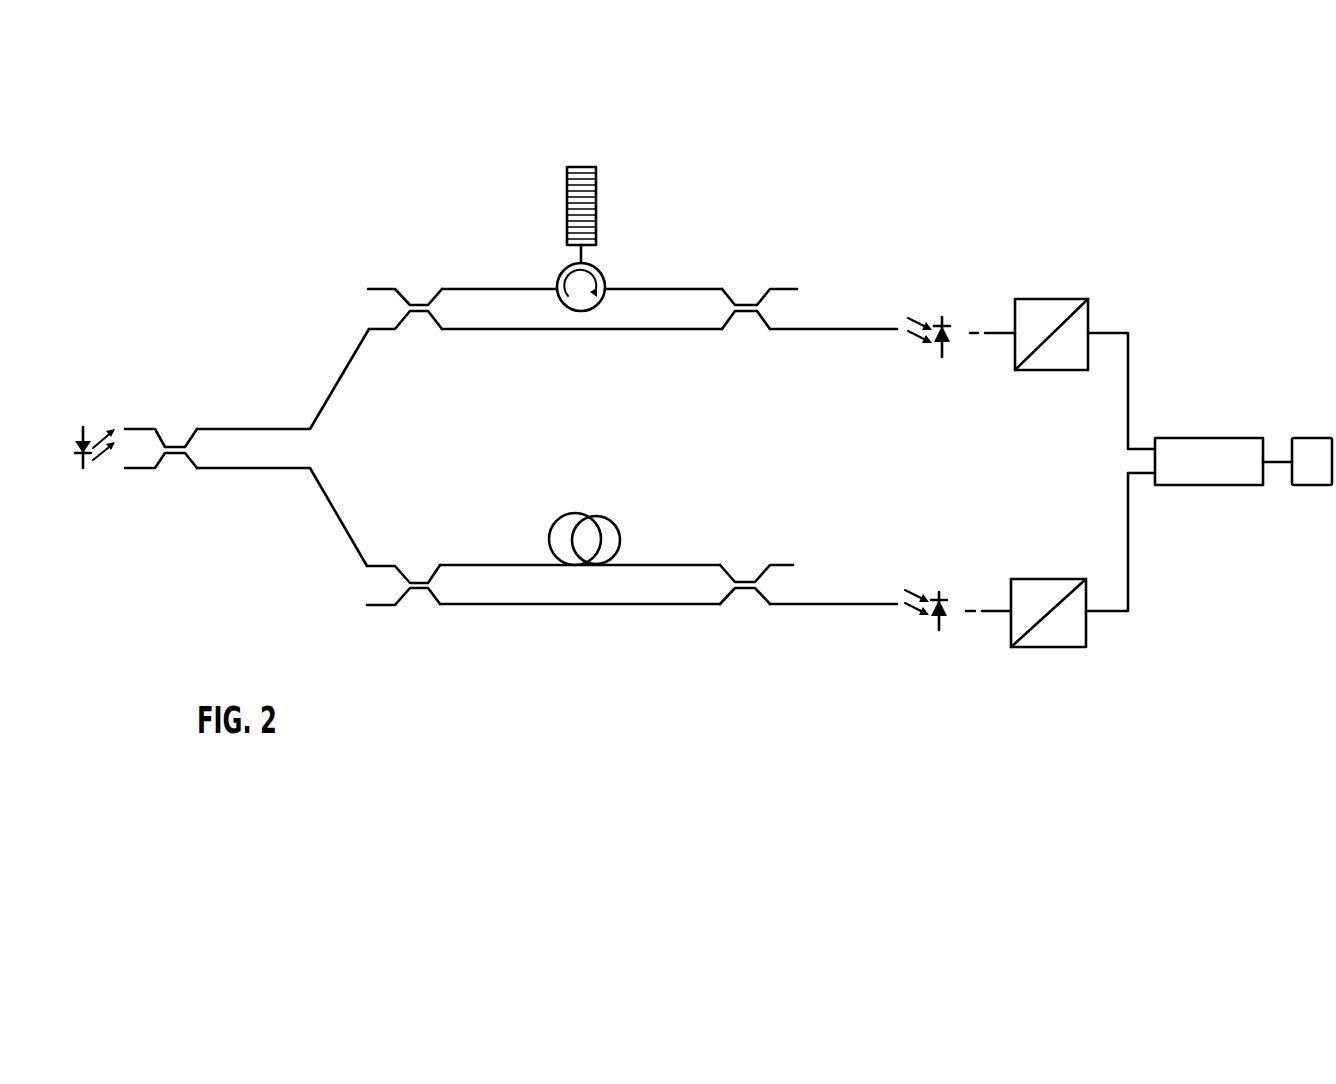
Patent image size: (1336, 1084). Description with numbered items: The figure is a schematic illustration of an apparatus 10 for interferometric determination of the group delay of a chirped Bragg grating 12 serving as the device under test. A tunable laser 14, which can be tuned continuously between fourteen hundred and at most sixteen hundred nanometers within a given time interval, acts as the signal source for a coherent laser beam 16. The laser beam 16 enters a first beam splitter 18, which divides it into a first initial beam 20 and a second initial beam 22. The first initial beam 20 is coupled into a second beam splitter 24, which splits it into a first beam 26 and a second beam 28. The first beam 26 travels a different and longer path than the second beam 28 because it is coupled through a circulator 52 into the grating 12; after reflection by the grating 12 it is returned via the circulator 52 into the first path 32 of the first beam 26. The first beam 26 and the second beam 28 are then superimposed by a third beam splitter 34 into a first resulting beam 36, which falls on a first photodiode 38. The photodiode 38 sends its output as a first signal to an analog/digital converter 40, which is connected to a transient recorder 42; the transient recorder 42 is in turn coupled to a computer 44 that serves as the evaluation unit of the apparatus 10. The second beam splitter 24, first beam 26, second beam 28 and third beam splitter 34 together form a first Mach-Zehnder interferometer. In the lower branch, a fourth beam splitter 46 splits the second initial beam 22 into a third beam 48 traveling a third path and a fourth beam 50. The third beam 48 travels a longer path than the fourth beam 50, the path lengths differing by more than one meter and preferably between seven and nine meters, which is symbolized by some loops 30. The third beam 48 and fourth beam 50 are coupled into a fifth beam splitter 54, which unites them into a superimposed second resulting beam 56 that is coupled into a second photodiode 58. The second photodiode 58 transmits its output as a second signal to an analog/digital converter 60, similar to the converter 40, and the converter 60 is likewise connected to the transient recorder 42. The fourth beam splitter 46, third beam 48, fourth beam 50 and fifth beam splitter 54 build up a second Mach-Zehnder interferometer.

The apparatus 10 is at (1012, 211).
The chirped Bragg grating 12 is at (598, 180).
The tunable laser 14 is at (83, 408).
The coherent laser beam 16 is at (142, 429).
The first beam splitter 18 is at (170, 455).
The first initial beam 20 is at (262, 429).
The second initial beam 22 is at (255, 468).
The second beam splitter 24 is at (423, 302).
The first beam 26 is at (494, 289).
The second beam 28 is at (497, 336).
The loops 30 is at (592, 514).
The first path 32 is at (702, 283).
The third beam splitter 34 is at (735, 312).
The first resulting beam 36 is at (848, 328).
The first photodiode 38 is at (929, 296).
The analog/digital converter 40 is at (1060, 299).
The transient recorder 42 is at (1213, 438).
The computer 44 is at (1313, 438).
The fourth beam splitter 46 is at (412, 590).
The third beam 48 is at (483, 565).
The fourth beam 50 is at (523, 605).
The circulator 52 is at (600, 267).
The fifth beam splitter 54 is at (736, 588).
The second resulting beam 56 is at (797, 604).
The second photodiode 58 is at (930, 630).
The analog/digital converter 60 is at (1050, 647).